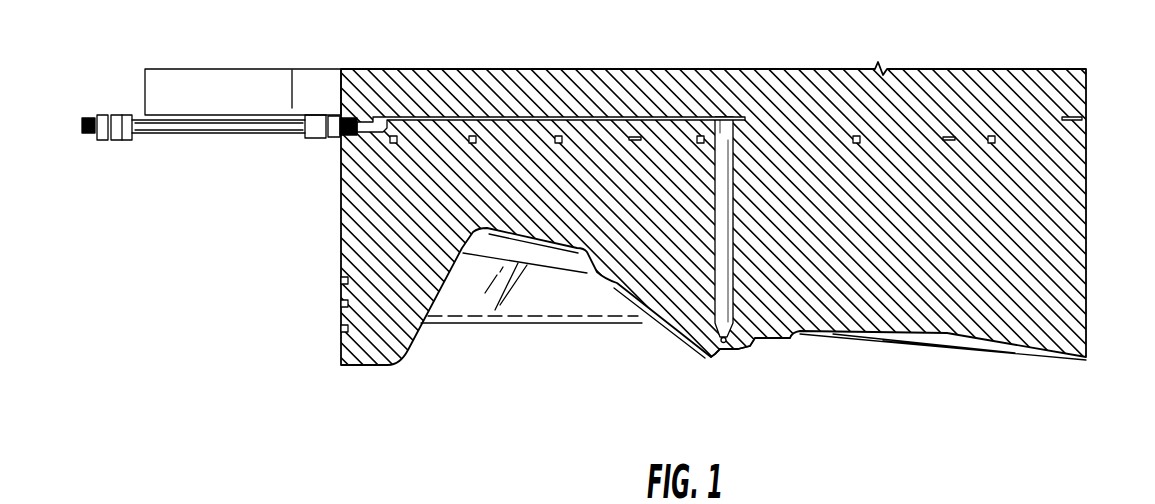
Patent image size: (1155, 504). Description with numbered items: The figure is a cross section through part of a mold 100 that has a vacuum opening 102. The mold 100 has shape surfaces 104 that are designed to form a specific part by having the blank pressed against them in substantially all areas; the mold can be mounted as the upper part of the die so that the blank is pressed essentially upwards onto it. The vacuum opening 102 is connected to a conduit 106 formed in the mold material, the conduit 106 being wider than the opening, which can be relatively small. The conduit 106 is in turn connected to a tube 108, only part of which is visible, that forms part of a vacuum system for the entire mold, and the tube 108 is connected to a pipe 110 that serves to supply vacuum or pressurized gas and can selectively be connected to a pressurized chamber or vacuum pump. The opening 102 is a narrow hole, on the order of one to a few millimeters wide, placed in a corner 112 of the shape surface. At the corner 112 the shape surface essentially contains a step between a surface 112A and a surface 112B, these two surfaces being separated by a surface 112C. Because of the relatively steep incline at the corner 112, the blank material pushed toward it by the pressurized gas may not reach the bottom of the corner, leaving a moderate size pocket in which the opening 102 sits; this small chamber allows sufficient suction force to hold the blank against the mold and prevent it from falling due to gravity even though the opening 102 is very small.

The mold 100 is at (591, 254).
The vacuum opening 102 is at (738, 330).
The shape surfaces 104 is at (650, 327).
The conduit 106 is at (735, 234).
The tube 108 is at (558, 117).
The pipe 110 is at (220, 135).
The corner 112 is at (711, 400).
The surface 112A is at (735, 351).
The surface 112B is at (708, 360).
The surface 112C is at (731, 350).